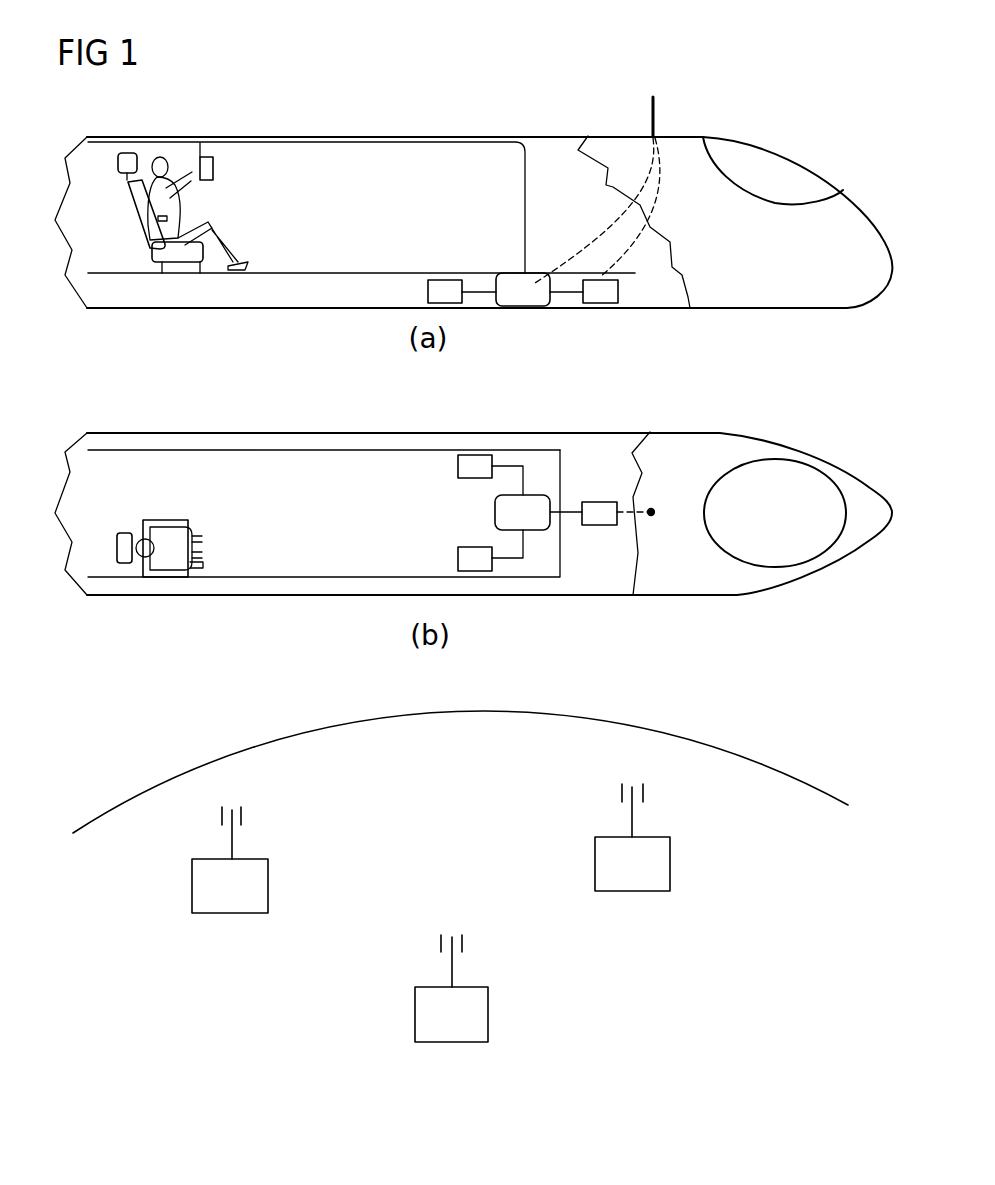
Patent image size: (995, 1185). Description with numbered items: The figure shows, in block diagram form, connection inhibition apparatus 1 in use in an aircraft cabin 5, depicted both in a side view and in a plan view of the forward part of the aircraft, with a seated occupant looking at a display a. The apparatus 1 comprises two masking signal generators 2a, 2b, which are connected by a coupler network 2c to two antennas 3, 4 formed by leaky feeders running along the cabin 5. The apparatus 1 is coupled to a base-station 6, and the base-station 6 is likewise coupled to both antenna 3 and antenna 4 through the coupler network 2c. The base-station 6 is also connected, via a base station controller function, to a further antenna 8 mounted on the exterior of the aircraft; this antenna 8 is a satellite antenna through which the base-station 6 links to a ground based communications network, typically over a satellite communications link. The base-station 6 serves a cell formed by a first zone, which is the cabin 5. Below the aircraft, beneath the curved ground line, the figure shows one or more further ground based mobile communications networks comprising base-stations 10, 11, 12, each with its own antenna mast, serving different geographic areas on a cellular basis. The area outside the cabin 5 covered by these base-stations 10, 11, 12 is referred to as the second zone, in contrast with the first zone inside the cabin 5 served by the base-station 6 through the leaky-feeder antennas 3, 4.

The connection inhibition apparatus 1 is at (441, 109).
The aircraft cabin 5 is at (77, 175).
The display device a is at (213, 170).
The further antenna 8 is at (656, 103).
The antenna 4 is at (332, 452).
The antenna 3 is at (311, 578).
The masking signal generator 2a is at (460, 462).
The masking signal generator 2b is at (460, 556).
The coupler network 2c is at (541, 518).
The base-station 6 is at (603, 525).
The base-station 10 is at (268, 887).
The base-station 11 is at (670, 862).
The base-station 12 is at (488, 1012).